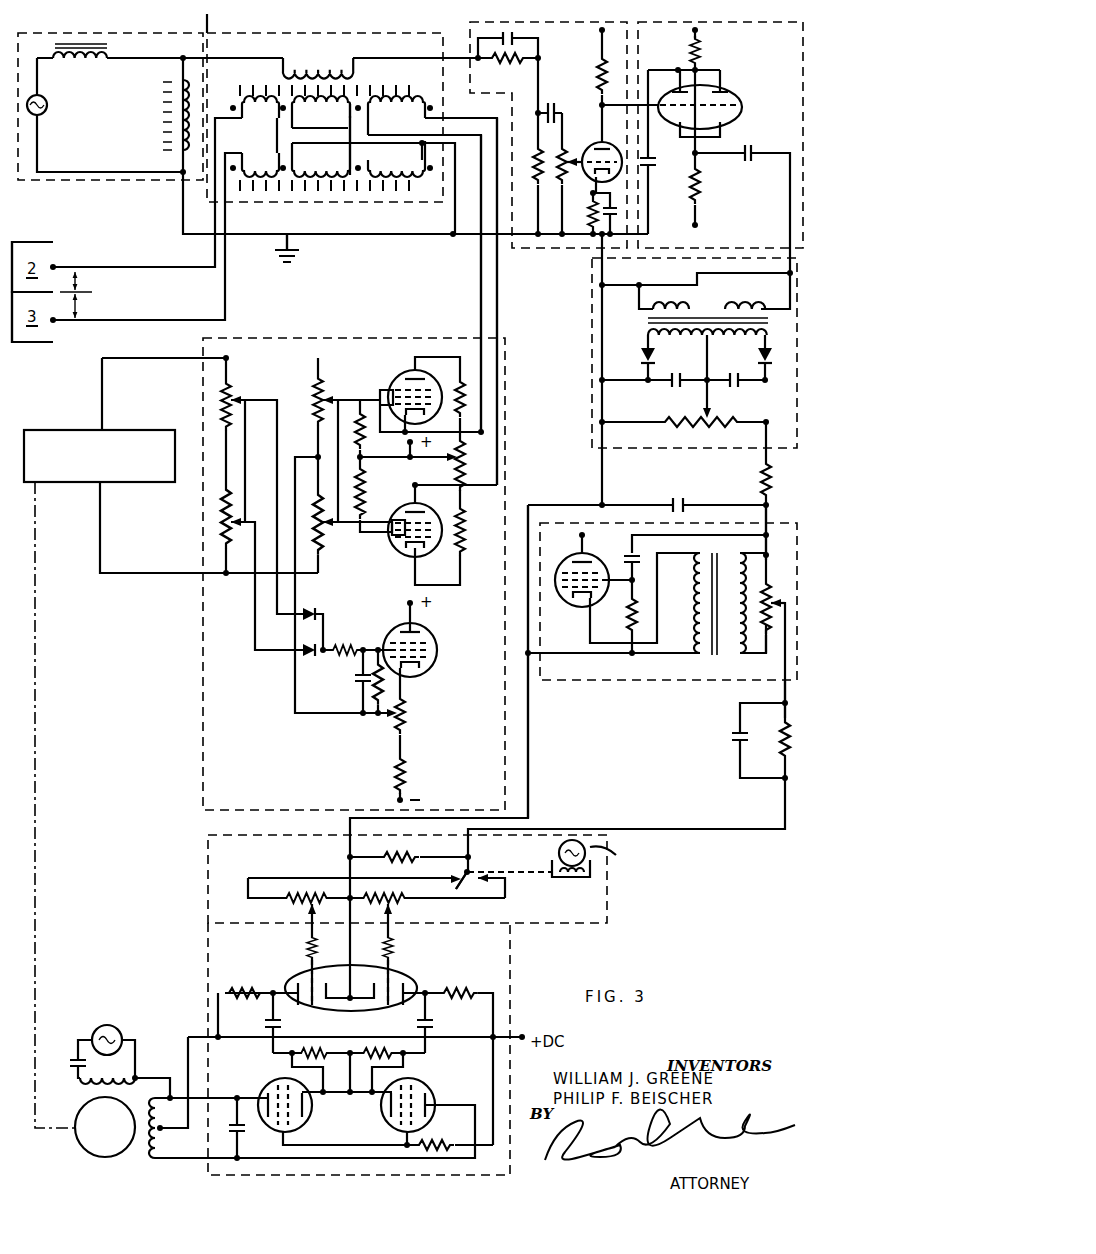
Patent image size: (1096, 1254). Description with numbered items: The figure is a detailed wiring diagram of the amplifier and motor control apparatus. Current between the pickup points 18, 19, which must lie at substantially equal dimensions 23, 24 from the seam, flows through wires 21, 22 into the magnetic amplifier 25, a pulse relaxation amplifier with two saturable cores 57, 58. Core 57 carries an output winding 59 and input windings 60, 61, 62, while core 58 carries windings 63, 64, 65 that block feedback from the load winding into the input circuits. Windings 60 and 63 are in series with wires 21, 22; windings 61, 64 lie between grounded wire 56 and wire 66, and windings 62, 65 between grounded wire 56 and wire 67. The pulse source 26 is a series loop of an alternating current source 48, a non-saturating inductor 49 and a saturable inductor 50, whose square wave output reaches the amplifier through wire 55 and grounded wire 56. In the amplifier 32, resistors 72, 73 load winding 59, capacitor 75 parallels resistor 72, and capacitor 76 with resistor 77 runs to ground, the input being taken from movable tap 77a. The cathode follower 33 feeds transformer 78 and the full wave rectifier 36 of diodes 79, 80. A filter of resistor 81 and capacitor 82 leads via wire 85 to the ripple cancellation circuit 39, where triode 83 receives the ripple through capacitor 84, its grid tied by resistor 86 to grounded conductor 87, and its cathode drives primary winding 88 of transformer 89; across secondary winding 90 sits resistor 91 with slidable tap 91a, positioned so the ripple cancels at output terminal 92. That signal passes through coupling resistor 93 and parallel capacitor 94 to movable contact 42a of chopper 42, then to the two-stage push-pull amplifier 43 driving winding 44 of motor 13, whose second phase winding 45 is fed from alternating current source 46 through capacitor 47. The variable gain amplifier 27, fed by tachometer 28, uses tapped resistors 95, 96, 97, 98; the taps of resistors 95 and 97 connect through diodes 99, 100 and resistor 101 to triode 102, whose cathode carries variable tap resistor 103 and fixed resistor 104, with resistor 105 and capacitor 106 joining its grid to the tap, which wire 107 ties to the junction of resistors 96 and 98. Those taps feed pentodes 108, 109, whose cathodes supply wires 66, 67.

The motor 13 is at (100, 1158).
The pickup point 18 is at (66, 240).
The pickup point 19 is at (55, 332).
The wire 21 is at (170, 262).
The wire 22 is at (185, 317).
The dimension 23 is at (81, 285).
The dimension 24 is at (81, 307).
The magnetic amplifier 25 is at (341, 33).
The pulse source 26 is at (137, 33).
The variable gain amplifier 27 is at (203, 751).
The tachometer 28 is at (69, 430).
The amplifier 32 is at (470, 22).
The cathode follower 33 is at (752, 22).
The rectifier 36 is at (592, 376).
The ripple cancellation circuit 39 is at (774, 520).
The chopper 42 is at (554, 926).
The movable contact 42a is at (476, 870).
The push-pull amplifier 43 is at (207, 928).
The winding 44 is at (148, 1138).
The second phase winding 45 is at (88, 1087).
The alternating current source 46 is at (109, 1024).
The capacitor 47 is at (71, 1054).
The source of alternating current 48 is at (48, 106).
The inductor 49 is at (73, 64).
The inductor 50 is at (162, 108).
The wire 55 is at (207, 33).
The grounded wire 56 is at (268, 238).
The saturable core 57 is at (242, 88).
The saturable core 58 is at (378, 194).
The output winding 59 is at (340, 58).
The input winding 60 is at (260, 115).
The input winding 61 is at (321, 113).
The input winding 62 is at (396, 115).
The winding 63 is at (260, 159).
The winding 64 is at (321, 146).
The winding 65 is at (396, 159).
The wire 66 is at (480, 274).
The wire 67 is at (498, 276).
The resistor 72 is at (490, 62).
The resistor 73 is at (536, 173).
The capacitor 75 is at (518, 37).
The capacitor 76 is at (548, 104).
The resistor 77 is at (564, 173).
The movable tap 77a is at (572, 154).
The transformer 78 is at (645, 322).
The diode 79 is at (642, 358).
The diode 80 is at (773, 358).
The resistor 81 is at (771, 466).
The capacitor 82 is at (680, 501).
The triode 83 is at (572, 558).
The capacitor 84 is at (625, 544).
The wire 85 is at (766, 534).
The resistor 86 is at (626, 613).
The grounded conductor 87 is at (527, 644).
The primary winding 88 is at (700, 603).
The transformer 89 is at (705, 658).
The secondary winding 90 is at (766, 636).
The resistor 91 is at (765, 617).
The slidable tap 91a is at (767, 598).
The output terminal 92 is at (784, 692).
The coupling resistor 93 is at (778, 740).
The capacitor 94 is at (726, 738).
The variable tapped resistor 95 is at (231, 387).
The variable tapped resistor 96 is at (326, 374).
The variable tapped resistor 97 is at (210, 518).
The variable tapped resistor 98 is at (324, 528).
The diode 99 is at (320, 598).
The diode 100 is at (308, 658).
The resistor 101 is at (338, 642).
The triode 102 is at (438, 662).
The variable tap resistor 103 is at (409, 715).
The fixed resistor 104 is at (409, 772).
The resistor 105 is at (386, 717).
The capacitor 106 is at (355, 686).
The wire 107 is at (293, 705).
The pentode 108 is at (404, 370).
The pentode 109 is at (405, 552).